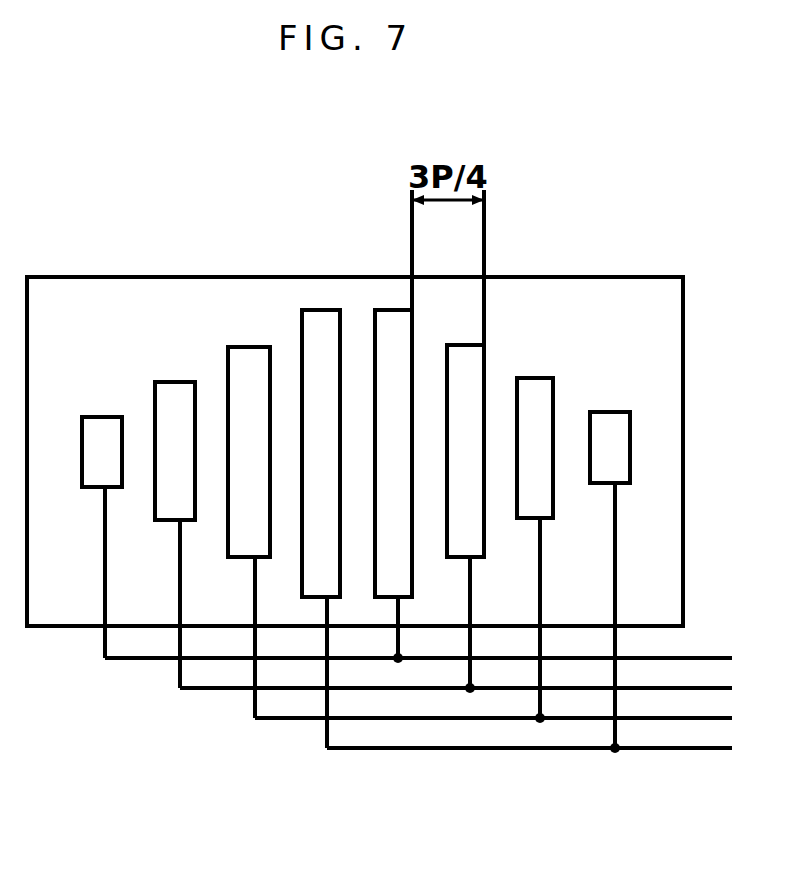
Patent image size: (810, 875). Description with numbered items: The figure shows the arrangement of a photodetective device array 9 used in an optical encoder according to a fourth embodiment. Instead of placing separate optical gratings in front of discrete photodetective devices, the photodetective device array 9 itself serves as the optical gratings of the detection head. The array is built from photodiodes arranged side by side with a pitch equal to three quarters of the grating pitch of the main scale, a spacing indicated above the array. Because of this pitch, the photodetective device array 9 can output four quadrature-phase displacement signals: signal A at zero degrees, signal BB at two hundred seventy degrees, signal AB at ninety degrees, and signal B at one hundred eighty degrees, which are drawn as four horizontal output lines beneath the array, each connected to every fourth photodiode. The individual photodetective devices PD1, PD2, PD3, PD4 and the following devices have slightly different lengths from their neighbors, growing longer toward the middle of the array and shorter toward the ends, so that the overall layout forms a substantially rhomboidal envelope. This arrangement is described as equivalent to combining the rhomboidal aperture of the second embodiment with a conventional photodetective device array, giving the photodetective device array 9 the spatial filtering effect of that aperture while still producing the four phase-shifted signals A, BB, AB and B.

The photodetective device array 9 is at (668, 337).
The photodetective device PD1 is at (100, 417).
The photodetective device PD2 is at (175, 382).
The photodetective device PD3 is at (248, 347).
The photodetective device PD4 is at (322, 310).
The displacement signal A is at (440, 659).
The displacement signal BB is at (489, 692).
The displacement signal AB is at (526, 722).
The displacement signal B is at (550, 754).